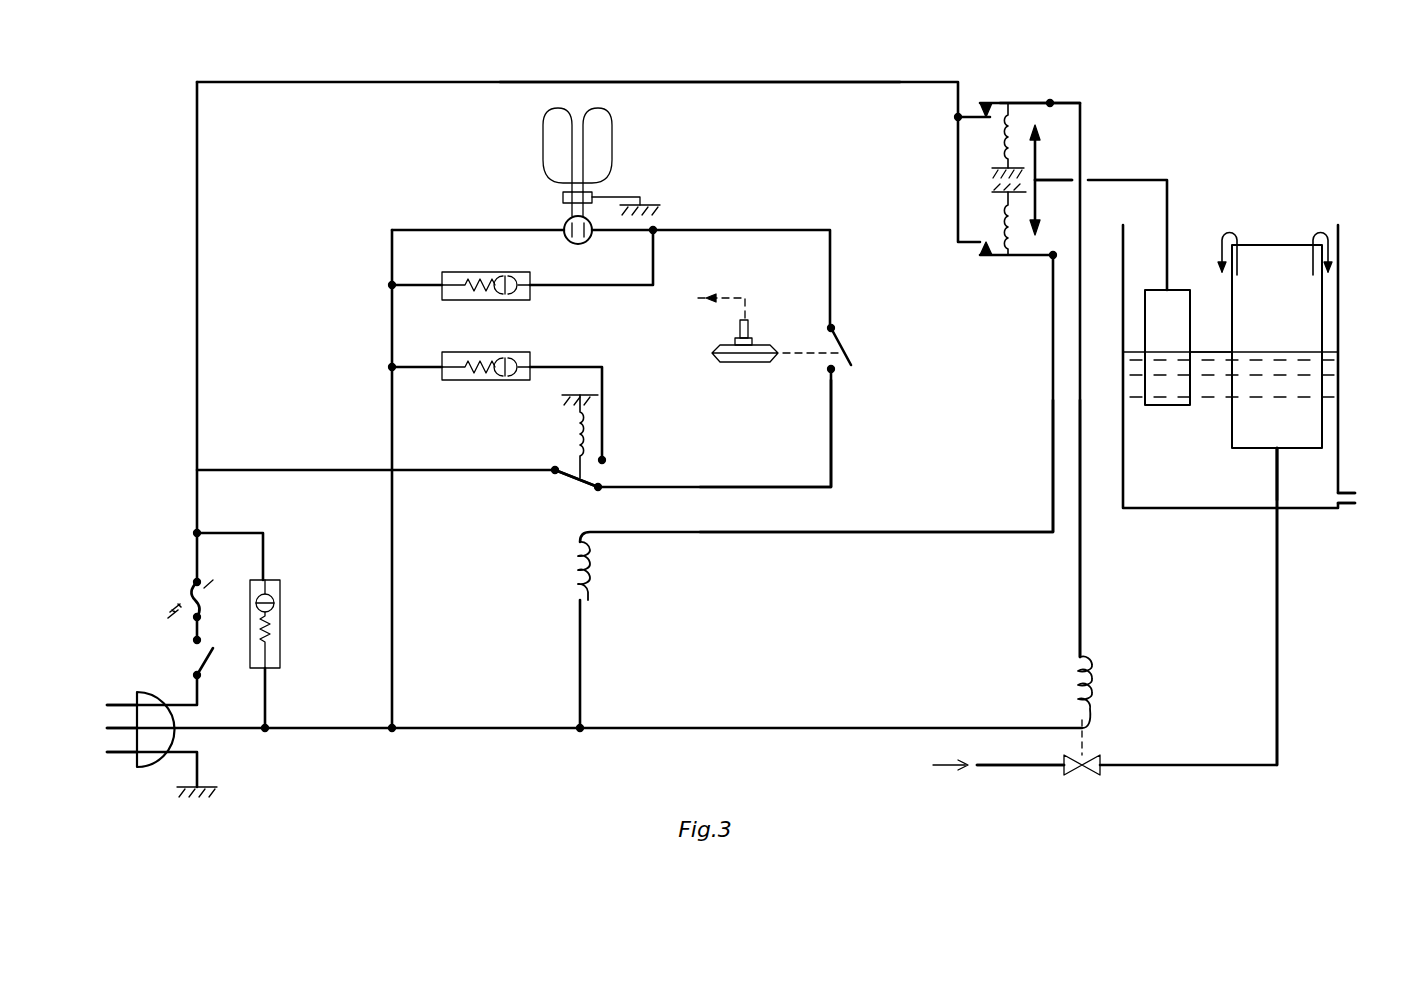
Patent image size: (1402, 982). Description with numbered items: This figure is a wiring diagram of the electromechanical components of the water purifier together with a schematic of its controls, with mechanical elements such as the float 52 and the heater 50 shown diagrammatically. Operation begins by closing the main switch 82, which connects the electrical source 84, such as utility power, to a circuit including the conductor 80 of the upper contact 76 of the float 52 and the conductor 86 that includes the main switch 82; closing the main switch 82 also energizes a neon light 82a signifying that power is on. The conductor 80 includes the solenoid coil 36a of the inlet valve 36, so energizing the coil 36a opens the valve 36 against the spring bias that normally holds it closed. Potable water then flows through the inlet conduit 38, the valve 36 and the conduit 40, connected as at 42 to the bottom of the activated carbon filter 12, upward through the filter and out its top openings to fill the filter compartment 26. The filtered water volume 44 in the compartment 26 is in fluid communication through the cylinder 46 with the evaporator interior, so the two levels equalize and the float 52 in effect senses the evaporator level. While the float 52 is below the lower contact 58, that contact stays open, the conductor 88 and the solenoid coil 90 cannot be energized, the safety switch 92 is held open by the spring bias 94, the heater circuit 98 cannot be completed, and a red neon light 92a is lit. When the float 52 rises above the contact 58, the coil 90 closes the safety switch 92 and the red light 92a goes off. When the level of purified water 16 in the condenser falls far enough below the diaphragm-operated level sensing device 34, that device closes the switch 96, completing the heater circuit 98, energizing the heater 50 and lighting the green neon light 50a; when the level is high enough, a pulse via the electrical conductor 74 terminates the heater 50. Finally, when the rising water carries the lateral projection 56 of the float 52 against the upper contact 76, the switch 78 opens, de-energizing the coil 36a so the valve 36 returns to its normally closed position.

The activated carbon filter 12 is at (1286, 307).
The purified water 16 is at (726, 296).
The filter compartment 26 is at (1340, 298).
The level sensing device 34 is at (770, 346).
The inlet valve 36 is at (1085, 778).
The solenoid coil 36a is at (1097, 698).
The inlet conduit 38 is at (1000, 768).
The conduit 40 is at (1279, 604).
The connection 42 is at (1273, 460).
The filtered water volume 44 is at (1205, 352).
The cylinder 46 is at (1350, 500).
The electrical heater 50 is at (612, 133).
The green neon light 50a is at (522, 302).
The float 52 is at (1181, 338).
The lateral projection 56 is at (1047, 180).
The lower contact 58 is at (1012, 257).
The electrical conductor 74 is at (798, 354).
The upper contact 76 is at (1032, 103).
The switch 78 is at (975, 103).
The conductor 80 is at (1083, 604).
The main switch 82 is at (205, 660).
The neon light 82a is at (282, 612).
The electrical source 84 is at (100, 723).
The conductor 86 is at (738, 80).
The conductor 88 is at (965, 534).
The solenoid coil 90 is at (590, 566).
The safety switch 92 is at (594, 480).
The red neon light 92a is at (492, 382).
The spring bias 94 is at (570, 432).
The switch 96 is at (845, 340).
The heater circuit 98 is at (833, 440).